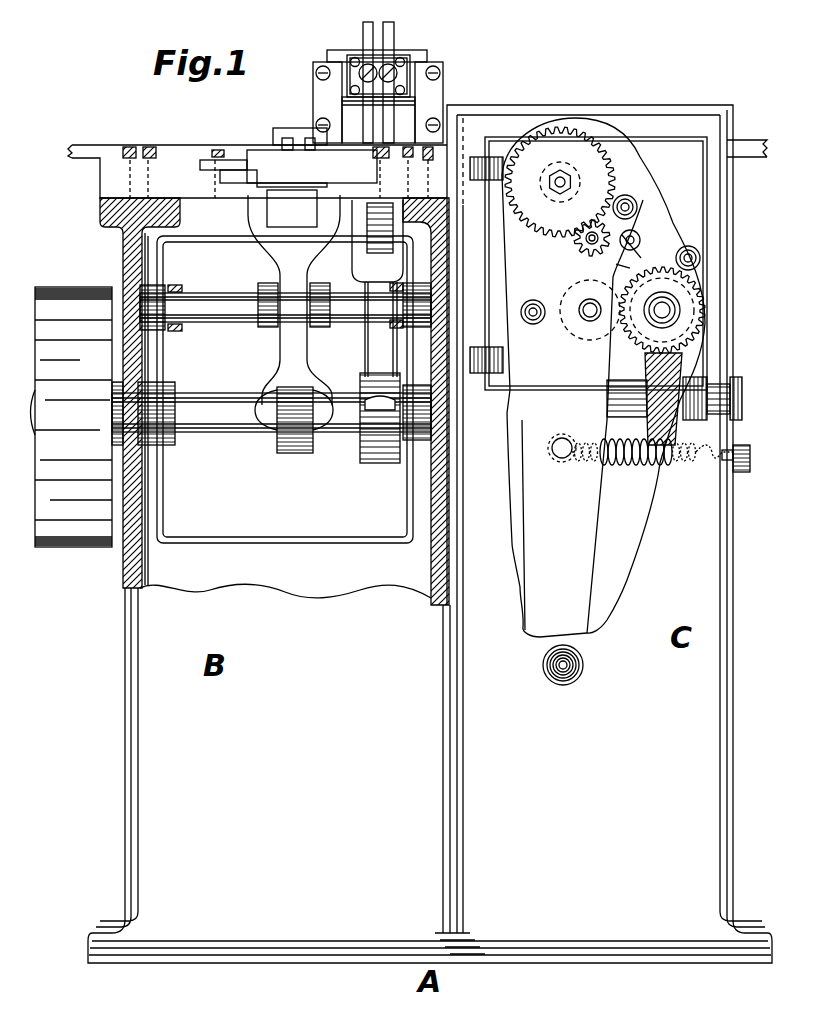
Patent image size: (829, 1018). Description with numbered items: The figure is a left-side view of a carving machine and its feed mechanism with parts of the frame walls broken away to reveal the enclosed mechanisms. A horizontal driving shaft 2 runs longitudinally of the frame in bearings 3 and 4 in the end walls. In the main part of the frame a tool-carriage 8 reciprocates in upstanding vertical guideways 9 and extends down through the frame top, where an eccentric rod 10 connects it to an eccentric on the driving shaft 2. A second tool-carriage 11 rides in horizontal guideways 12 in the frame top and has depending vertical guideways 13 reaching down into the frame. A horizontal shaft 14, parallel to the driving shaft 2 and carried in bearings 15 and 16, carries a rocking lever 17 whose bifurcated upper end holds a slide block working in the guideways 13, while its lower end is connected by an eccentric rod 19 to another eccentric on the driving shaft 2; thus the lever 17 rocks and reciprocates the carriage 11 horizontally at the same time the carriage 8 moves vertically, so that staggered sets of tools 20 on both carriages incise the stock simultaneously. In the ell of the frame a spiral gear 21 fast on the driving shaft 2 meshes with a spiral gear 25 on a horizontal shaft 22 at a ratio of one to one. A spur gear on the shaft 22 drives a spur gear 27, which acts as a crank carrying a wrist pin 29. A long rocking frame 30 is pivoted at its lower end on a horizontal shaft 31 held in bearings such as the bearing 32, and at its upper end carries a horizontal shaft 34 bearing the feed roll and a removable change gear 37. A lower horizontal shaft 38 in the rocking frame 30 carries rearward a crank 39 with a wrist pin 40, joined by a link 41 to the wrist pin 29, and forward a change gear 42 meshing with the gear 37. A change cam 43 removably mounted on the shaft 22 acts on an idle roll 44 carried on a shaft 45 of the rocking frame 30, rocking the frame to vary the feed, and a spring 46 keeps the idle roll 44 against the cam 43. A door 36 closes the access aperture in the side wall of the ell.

The driving shaft 2 is at (222, 418).
The bearing 3 is at (170, 440).
The bearing 4 is at (748, 428).
The tool-carriage 8 is at (400, 57).
The vertical guideways 9 is at (422, 62).
The eccentric rod 10 is at (377, 288).
The tool-carriage 11 is at (265, 170).
The horizontal guideways 12 is at (225, 182).
The vertical guideways 13 is at (292, 208).
The horizontal shaft 14 is at (232, 305).
The bearing 15 is at (150, 305).
The bearing 16 is at (410, 307).
The rocking lever 17 is at (294, 300).
The eccentric rod 19 is at (295, 422).
The tools 20 is at (367, 30).
The spiral gear 21 is at (715, 403).
The horizontal shaft 22 is at (668, 303).
The spiral gear 25 is at (638, 358).
The spur gear 27 is at (665, 263).
The wrist pin 29 is at (616, 263).
The rocking frame 30 is at (603, 377).
The horizontal shaft 31 is at (575, 675).
The bearing 32 is at (564, 685).
The horizontal shaft 34 is at (560, 195).
The door 36 is at (516, 90).
The change gear 37 is at (560, 182).
The horizontal shaft 38 is at (583, 250).
The crank 39 is at (626, 197).
The wrist pin 40 is at (633, 232).
The link 41 is at (634, 240).
The change gear 42 is at (594, 245).
The change cam 43 is at (688, 320).
The idle roll 44 is at (560, 322).
The shaft 45 is at (590, 321).
The spring 46 is at (623, 462).